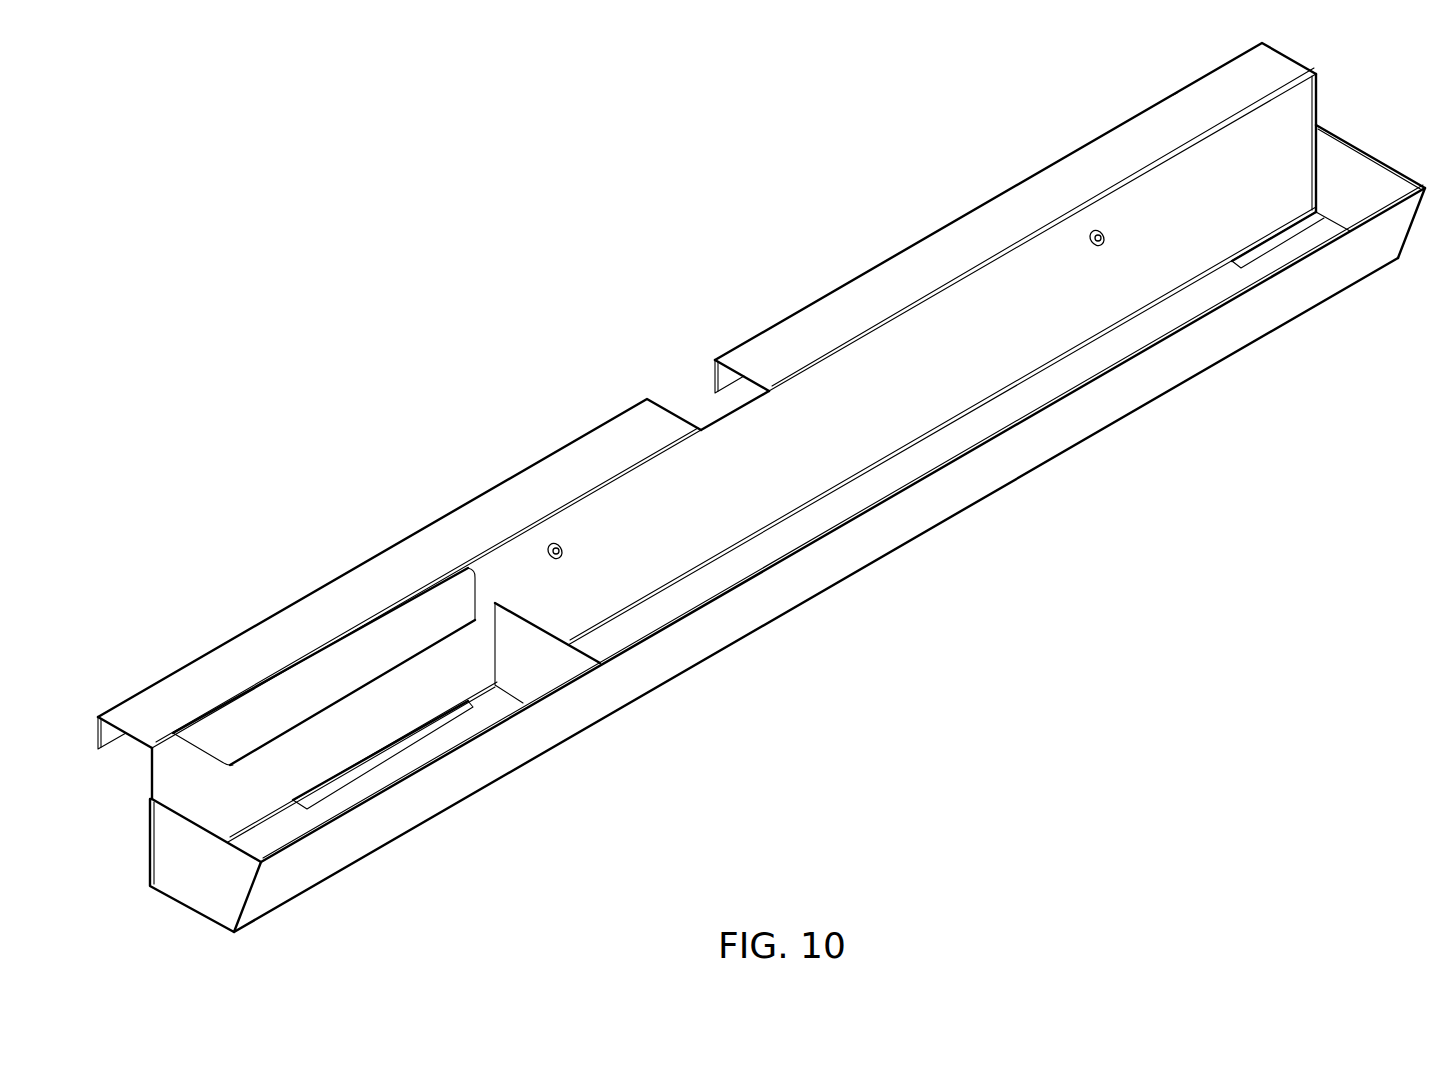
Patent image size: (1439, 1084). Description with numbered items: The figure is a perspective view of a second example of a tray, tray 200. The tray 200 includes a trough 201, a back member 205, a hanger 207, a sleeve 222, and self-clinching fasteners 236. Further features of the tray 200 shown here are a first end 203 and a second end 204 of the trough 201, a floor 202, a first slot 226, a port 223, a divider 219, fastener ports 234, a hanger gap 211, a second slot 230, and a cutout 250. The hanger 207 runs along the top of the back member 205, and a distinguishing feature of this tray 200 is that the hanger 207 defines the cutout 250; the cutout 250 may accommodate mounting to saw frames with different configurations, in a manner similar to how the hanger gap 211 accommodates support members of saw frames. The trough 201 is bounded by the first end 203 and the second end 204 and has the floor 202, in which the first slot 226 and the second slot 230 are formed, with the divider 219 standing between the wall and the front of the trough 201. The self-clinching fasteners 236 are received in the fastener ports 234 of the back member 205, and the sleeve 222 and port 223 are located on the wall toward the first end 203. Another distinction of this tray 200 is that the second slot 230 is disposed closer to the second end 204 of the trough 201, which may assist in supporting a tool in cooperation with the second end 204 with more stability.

The tray 200 is at (758, 487).
The trough 201 is at (564, 720).
The floor 202 is at (982, 420).
The first end 203 is at (165, 833).
The second end 204 is at (1348, 152).
The back member 205 is at (678, 508).
The hanger 207 is at (446, 503).
The hanger gap 211 is at (712, 358).
The divider 219 is at (523, 628).
The sleeve 222 is at (487, 579).
The port 223 is at (431, 596).
The first slot 226 is at (449, 722).
The second slot 230 is at (1280, 240).
The fastener ports 234 is at (563, 545).
The self-clinching fasteners 236 is at (565, 553).
The cutout 250 is at (1042, 172).